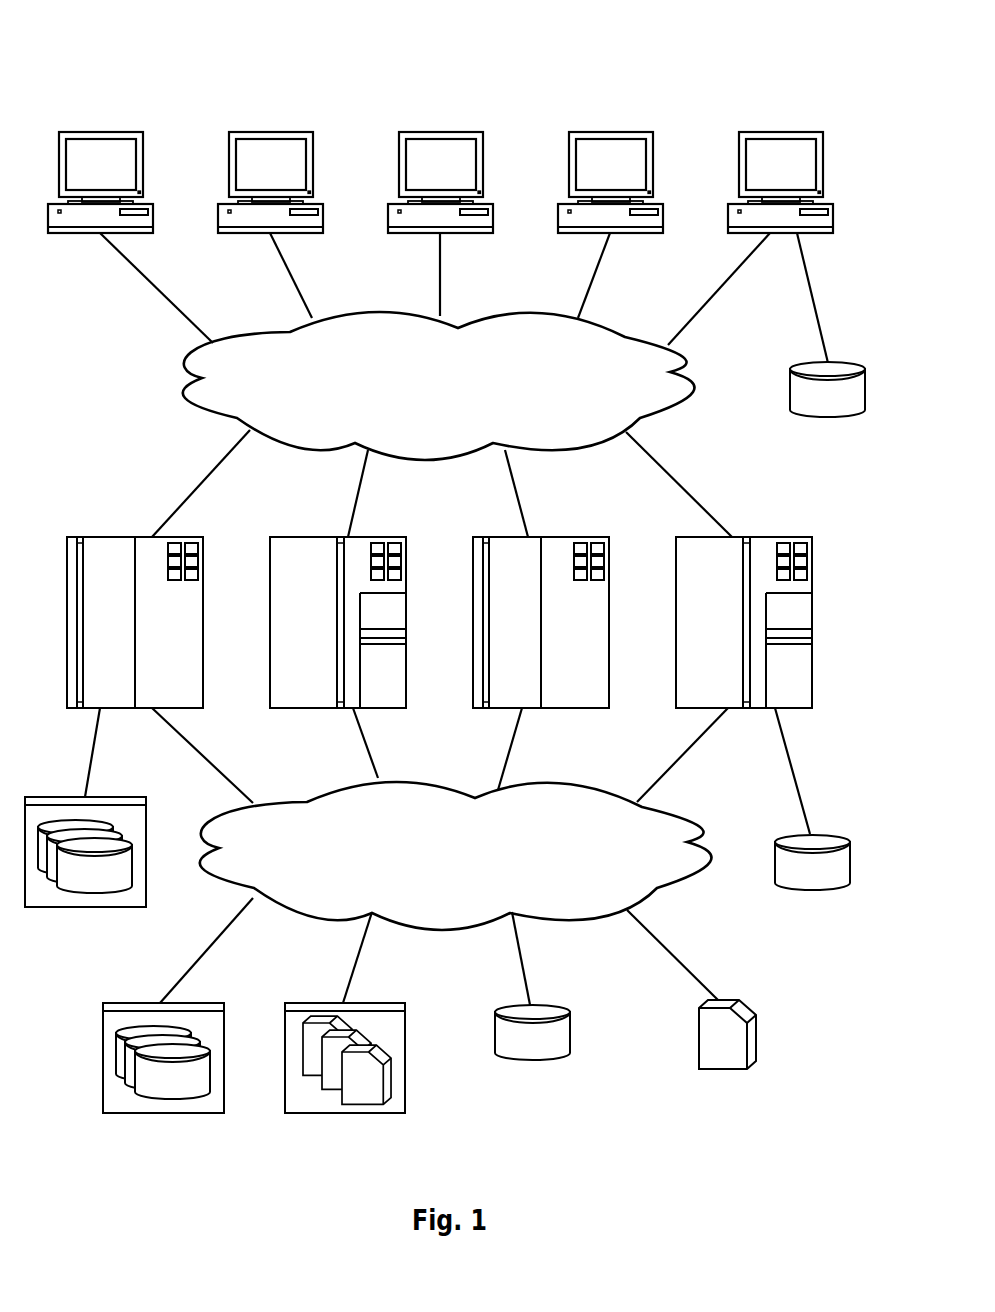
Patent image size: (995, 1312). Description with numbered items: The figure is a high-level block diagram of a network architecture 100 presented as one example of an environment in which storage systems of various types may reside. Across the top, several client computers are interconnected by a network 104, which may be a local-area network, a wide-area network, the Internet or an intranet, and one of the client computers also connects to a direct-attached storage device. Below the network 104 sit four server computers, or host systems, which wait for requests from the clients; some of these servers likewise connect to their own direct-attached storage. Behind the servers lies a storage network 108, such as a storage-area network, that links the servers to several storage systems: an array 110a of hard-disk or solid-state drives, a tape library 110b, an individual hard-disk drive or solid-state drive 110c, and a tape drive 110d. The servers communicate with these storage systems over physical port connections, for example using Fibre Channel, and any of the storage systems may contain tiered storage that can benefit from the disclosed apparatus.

The network architecture 100 is at (168, 63).
The network 104 is at (612, 401).
The storage network 108 is at (594, 866).
The array of hard-disk drives or solid-state drives 110a is at (160, 1115).
The tape library 110b is at (345, 1115).
The individual hard-disk drive or solid-state drive 110c is at (530, 1065).
The tape drive 110d is at (720, 1072).